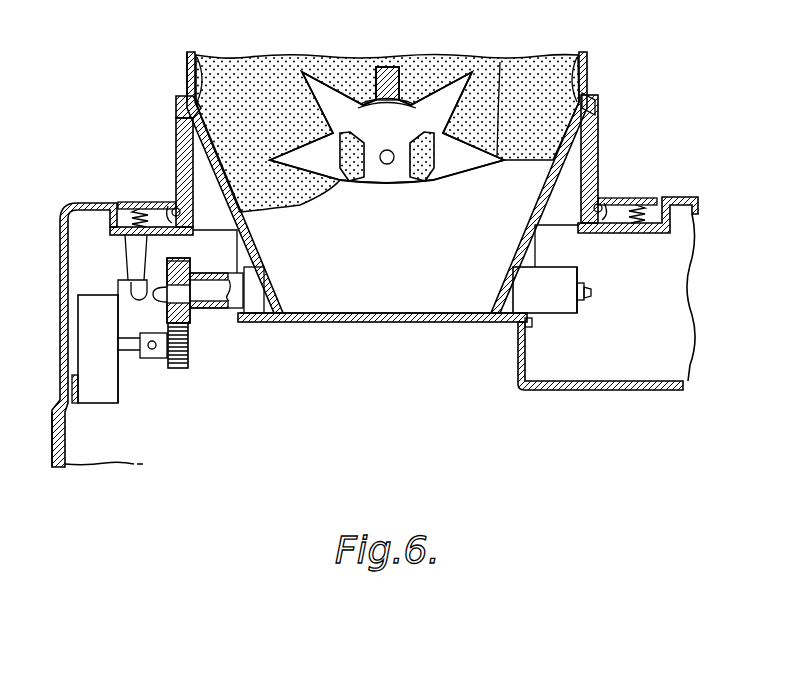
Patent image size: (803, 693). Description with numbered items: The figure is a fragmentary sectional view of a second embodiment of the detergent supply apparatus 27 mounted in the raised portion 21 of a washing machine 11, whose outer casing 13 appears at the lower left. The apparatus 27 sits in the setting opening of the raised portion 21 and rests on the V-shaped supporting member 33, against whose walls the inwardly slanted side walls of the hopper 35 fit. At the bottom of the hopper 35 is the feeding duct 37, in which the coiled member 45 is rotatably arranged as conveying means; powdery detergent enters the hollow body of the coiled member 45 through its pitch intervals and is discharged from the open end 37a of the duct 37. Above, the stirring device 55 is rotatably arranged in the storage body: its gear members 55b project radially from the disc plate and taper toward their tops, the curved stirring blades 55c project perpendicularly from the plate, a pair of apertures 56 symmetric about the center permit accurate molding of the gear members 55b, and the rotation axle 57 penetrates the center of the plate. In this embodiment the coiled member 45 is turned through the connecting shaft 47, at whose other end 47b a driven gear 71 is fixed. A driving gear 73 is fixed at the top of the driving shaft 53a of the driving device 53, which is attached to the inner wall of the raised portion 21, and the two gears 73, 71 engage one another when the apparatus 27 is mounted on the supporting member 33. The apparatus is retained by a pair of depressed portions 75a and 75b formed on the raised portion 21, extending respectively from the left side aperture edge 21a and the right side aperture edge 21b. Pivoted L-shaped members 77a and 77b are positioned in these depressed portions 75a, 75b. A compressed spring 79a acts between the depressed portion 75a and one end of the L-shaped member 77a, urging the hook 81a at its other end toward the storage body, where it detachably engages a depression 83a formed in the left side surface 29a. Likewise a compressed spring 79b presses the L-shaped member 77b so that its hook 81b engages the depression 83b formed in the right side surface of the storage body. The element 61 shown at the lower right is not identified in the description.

The washing machine 11 is at (54, 445).
The outer casing 13 is at (68, 456).
The raised portion 21 is at (75, 201).
The left side aperture edge 21a is at (194, 231).
The right side aperture edge 21b is at (575, 226).
The detergent supply apparatus 27 is at (593, 69).
The left side surface 29a is at (187, 58).
The V-shaped supporting member 33 is at (341, 323).
The hopper 35 is at (390, 306).
The feeding duct 37 is at (514, 299).
The open end 37a is at (578, 306).
The coiled member 45 is at (591, 292).
The connecting shaft 47 is at (214, 297).
The other end of connecting shaft 47b is at (163, 278).
The driving device 53 is at (90, 371).
The driving shaft 53a is at (129, 353).
The stirring device 55 is at (411, 78).
The gear members 55b is at (498, 62).
The curved stirring blades 55c is at (384, 97).
The apertures 56 is at (352, 180).
The rotation axle 57 is at (387, 166).
The housing 61 is at (633, 391).
The driven gear 71 is at (189, 307).
The driving gear 73 is at (182, 372).
The depressed portion 75a is at (165, 205).
The depressed portion 75b is at (618, 200).
The L-shaped member 77a is at (176, 120).
The L-shaped member 77b is at (599, 139).
The compressed spring 79a is at (137, 203).
The compressed spring 79b is at (655, 198).
The hook 81a is at (178, 99).
The hook 81b is at (598, 106).
The depression 83a is at (211, 51).
The depression 83b is at (578, 53).